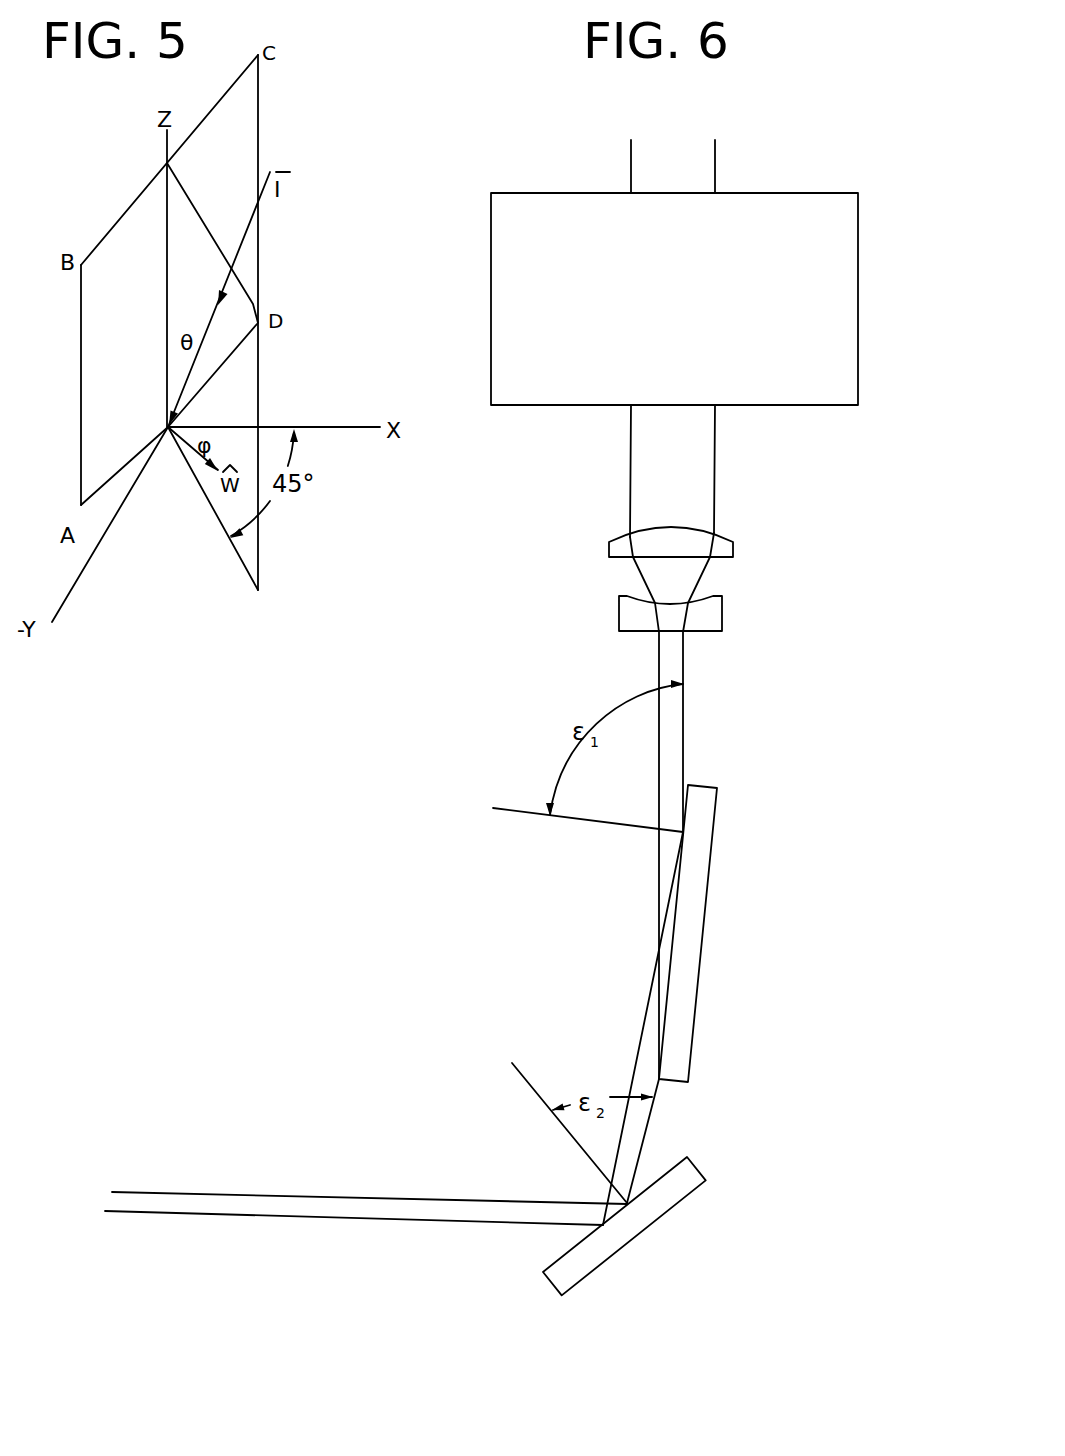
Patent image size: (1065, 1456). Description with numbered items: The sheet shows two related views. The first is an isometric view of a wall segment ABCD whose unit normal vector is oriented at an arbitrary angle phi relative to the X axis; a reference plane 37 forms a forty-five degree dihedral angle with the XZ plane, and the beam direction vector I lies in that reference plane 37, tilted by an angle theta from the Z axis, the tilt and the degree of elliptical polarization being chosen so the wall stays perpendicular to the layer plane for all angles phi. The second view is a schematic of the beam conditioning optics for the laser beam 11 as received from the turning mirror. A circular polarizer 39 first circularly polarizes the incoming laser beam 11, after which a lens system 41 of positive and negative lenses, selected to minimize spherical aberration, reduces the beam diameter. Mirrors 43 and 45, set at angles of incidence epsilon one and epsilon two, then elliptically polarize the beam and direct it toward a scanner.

In FIG. 5, the laser beam 11 is at (250, 227).
In FIG. 6, the laser beam 11 is at (715, 483).
In FIG. 5, the reference plane 37 is at (212, 375).
In FIG. 6, the circular polarizer 39 is at (695, 338).
In FIG. 6, the lens system 41 is at (598, 540).
In FIG. 6, the mirror 43 is at (697, 951).
In FIG. 6, the mirror 45 is at (630, 1237).